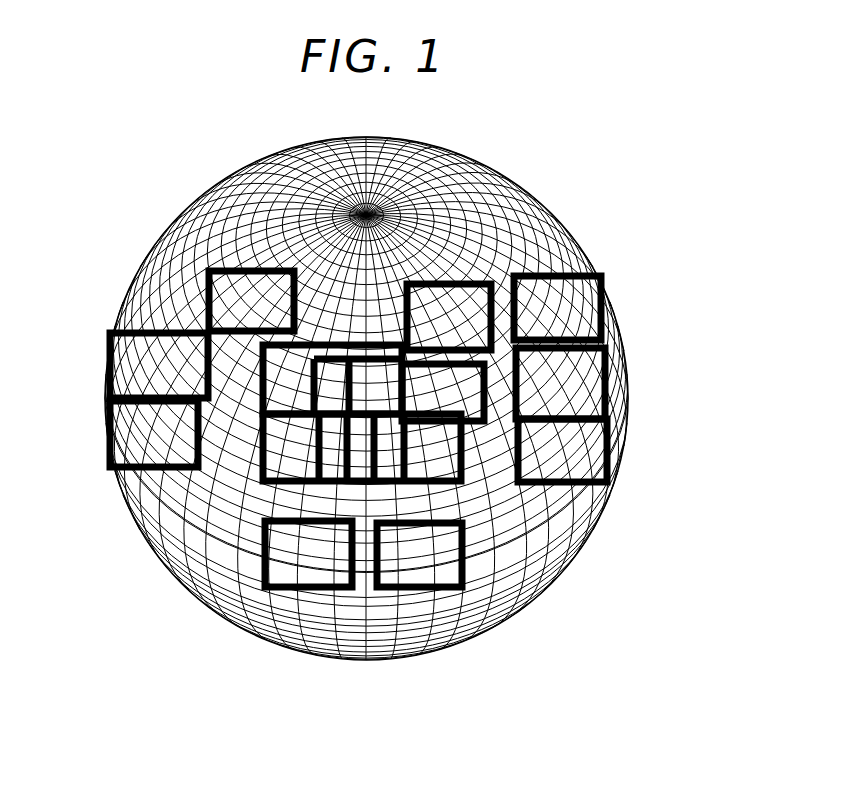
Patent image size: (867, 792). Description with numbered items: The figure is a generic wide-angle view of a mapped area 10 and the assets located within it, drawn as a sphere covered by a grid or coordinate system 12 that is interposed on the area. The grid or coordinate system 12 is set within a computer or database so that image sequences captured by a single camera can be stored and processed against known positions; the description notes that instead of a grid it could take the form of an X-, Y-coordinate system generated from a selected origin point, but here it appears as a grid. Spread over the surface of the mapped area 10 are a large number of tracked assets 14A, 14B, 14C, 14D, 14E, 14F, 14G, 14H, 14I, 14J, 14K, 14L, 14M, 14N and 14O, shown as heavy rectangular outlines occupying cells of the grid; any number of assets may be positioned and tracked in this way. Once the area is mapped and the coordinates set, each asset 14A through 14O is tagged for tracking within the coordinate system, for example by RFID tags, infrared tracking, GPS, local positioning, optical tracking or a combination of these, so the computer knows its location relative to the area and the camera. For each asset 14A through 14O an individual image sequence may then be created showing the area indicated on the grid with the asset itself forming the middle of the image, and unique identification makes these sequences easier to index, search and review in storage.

The mapped area 10 is at (574, 164).
The grid or coordinate system 12 is at (572, 213).
The asset 14A is at (237, 307).
The asset 14B is at (470, 282).
The asset 14C is at (599, 290).
The asset 14D is at (609, 372).
The asset 14E is at (553, 566).
The asset 14F is at (208, 204).
The asset 14G is at (192, 236).
The asset 14H is at (611, 456).
The asset 14I is at (533, 595).
The asset 14J is at (470, 530).
The asset 14K is at (200, 556).
The asset 14L is at (147, 546).
The asset 14M is at (105, 447).
The asset 14N is at (410, 575).
The asset 14O is at (317, 577).